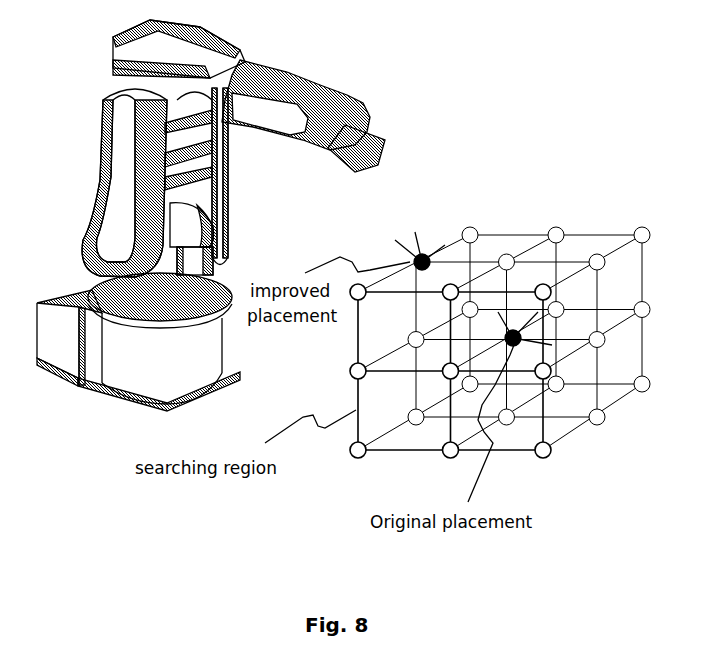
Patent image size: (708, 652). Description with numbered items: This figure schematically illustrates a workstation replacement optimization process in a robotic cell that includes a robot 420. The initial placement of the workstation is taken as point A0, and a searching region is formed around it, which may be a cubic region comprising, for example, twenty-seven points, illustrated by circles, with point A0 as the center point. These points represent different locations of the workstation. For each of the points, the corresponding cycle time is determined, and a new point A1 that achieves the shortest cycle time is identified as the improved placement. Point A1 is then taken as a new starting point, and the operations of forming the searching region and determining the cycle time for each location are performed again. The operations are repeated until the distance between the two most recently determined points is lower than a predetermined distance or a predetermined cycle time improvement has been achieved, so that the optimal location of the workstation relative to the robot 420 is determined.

The robot 420 is at (232, 215).
The new point A1 is at (419, 249).
The initial placement point A0 is at (525, 327).